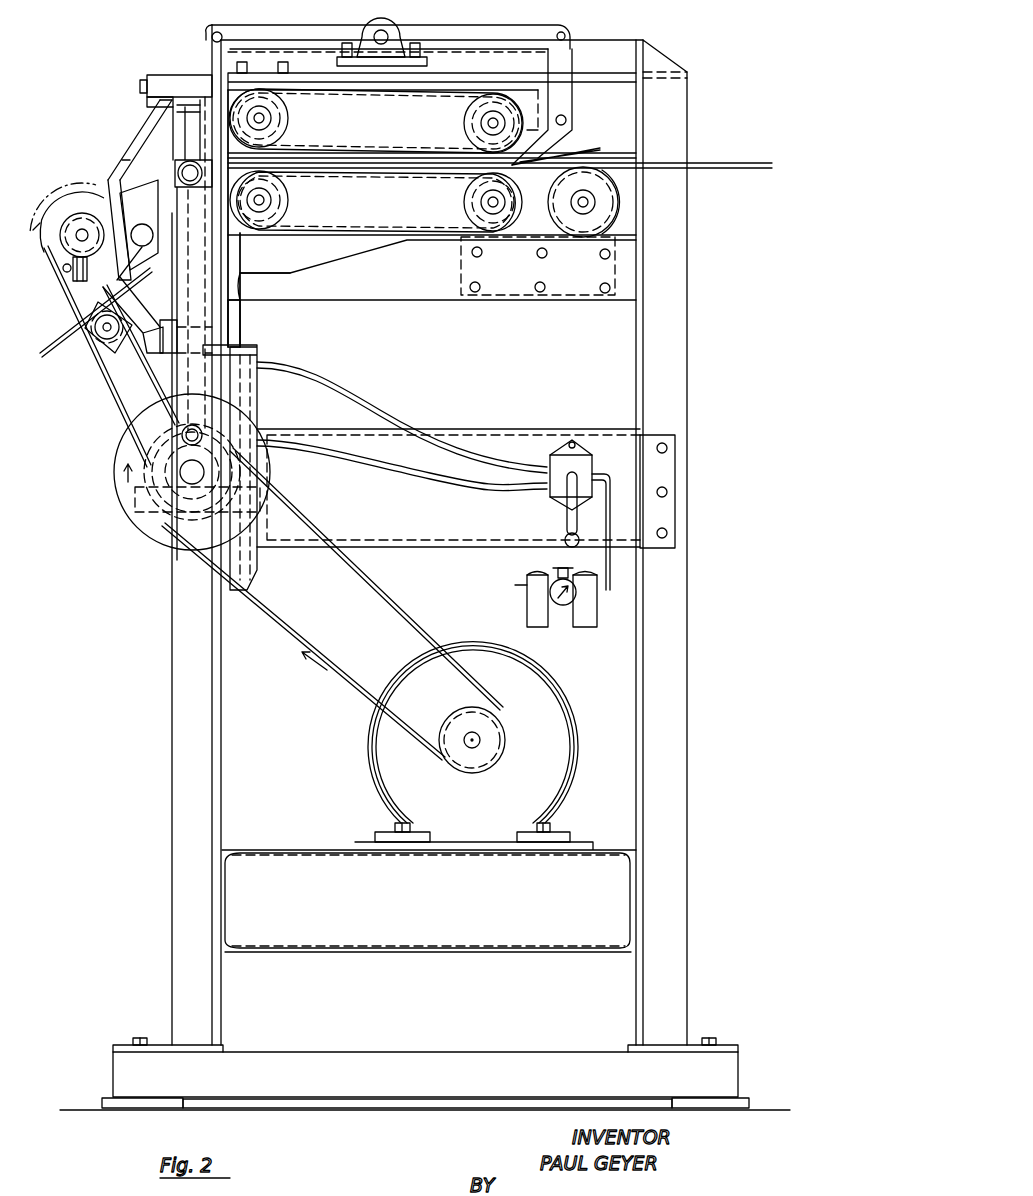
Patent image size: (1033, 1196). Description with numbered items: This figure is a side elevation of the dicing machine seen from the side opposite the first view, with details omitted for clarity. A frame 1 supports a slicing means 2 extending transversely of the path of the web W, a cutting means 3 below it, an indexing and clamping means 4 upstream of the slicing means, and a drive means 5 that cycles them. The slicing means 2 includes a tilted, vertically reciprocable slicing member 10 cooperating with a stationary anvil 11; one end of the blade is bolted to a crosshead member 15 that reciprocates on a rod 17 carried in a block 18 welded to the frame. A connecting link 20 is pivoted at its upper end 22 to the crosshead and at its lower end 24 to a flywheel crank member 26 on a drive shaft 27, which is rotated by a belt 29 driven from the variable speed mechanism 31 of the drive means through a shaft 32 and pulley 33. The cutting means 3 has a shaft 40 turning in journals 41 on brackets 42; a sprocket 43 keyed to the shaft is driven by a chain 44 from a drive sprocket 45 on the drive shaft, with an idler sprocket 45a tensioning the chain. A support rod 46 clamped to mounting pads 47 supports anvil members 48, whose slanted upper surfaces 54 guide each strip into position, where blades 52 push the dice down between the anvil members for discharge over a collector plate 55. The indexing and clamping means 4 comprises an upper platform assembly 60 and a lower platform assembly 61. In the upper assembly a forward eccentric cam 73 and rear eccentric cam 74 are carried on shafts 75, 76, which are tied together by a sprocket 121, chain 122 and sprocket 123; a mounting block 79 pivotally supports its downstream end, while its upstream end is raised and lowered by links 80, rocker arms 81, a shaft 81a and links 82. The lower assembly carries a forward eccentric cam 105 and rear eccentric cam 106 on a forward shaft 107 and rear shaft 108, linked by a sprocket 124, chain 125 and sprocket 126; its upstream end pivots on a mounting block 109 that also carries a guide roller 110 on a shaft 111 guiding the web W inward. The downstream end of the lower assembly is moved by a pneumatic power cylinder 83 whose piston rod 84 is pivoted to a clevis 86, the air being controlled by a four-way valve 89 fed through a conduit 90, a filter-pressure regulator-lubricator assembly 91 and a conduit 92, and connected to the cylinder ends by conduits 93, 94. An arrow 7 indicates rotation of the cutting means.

The frame 1 is at (143, 756).
The slicing means 2 is at (140, 154).
The cutting means 3 is at (74, 308).
The indexing and clamping means 4 is at (606, 96).
The drive means 5 is at (357, 774).
The direction arrow 7 is at (20, 221).
The slicing member 10 is at (172, 130).
The anvil 11 is at (172, 74).
The crosshead member 15 is at (178, 114).
The rod 17 is at (180, 106).
The block 18 is at (198, 78).
The connecting link 20 is at (176, 362).
The upper end pivot 22 is at (205, 165).
The lower end pivot 24 is at (196, 425).
The flywheel crank member 26 is at (114, 478).
The drive shaft 27 is at (190, 480).
The belt 29 is at (424, 608).
The variable speed mechanism 31 is at (570, 700).
The shaft 32 is at (478, 744).
The pulley 33 is at (446, 720).
The shaft 40 is at (80, 235).
The journal 41 is at (56, 186).
The bracket 42 is at (135, 132).
The sprocket 43 is at (74, 278).
The chain 44 is at (108, 395).
The drive sprocket 45 is at (156, 402).
The idler sprocket 45a is at (128, 290).
The support rod 46 is at (138, 262).
The mounting pad 47 is at (112, 180).
The anvil member 48 is at (148, 194).
The blade 52 is at (63, 270).
The slanted upper surface 54 is at (125, 168).
The collector plate 55 is at (48, 346).
The upper platform assembly 60 is at (574, 143).
The lower platform assembly 61 is at (326, 251).
The forward eccentric cam 73 is at (288, 104).
The rear eccentric cam 74 is at (465, 108).
The shaft 75 is at (275, 126).
The shaft 76 is at (472, 130).
The mounting block 79 is at (285, 74).
The link 80 is at (572, 48).
The rocker arm 81 is at (460, 30).
The shaft 81a is at (366, 33).
The link 82 is at (210, 38).
The pneumatic power cylinder 83 is at (258, 350).
The piston rod 84 is at (240, 326).
The clevis 86 is at (232, 247).
The four-way valve 89 is at (549, 460).
The conduit 90 is at (522, 582).
The filter-pressure regulator-lubricator assembly 91 is at (545, 562).
The conduit 92 is at (610, 566).
The conduit 93 is at (434, 484).
The conduit 94 is at (428, 446).
The forward eccentric cam 105 is at (278, 212).
The rear eccentric cam 106 is at (470, 214).
The forward shaft 107 is at (280, 200).
The rear shaft 108 is at (478, 200).
The mounting block 109 is at (615, 272).
The guide roller 110 is at (620, 192).
The shaft 111 is at (590, 206).
The sprocket 121 is at (300, 118).
The chain 122 is at (420, 98).
The sprocket 123 is at (470, 120).
The sprocket 124 is at (468, 184).
The chain 125 is at (397, 174).
The sprocket 126 is at (285, 186).
The web W is at (752, 157).